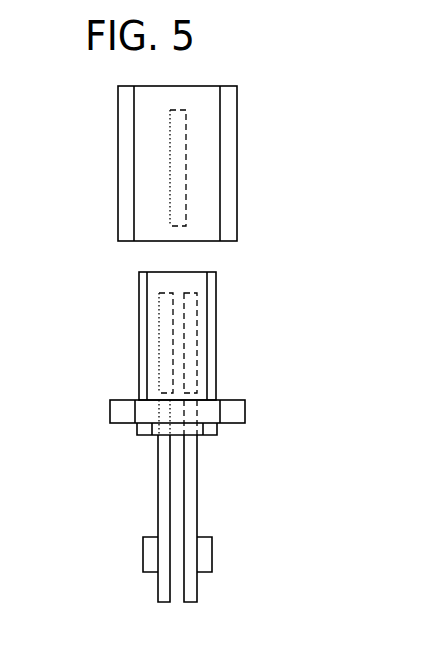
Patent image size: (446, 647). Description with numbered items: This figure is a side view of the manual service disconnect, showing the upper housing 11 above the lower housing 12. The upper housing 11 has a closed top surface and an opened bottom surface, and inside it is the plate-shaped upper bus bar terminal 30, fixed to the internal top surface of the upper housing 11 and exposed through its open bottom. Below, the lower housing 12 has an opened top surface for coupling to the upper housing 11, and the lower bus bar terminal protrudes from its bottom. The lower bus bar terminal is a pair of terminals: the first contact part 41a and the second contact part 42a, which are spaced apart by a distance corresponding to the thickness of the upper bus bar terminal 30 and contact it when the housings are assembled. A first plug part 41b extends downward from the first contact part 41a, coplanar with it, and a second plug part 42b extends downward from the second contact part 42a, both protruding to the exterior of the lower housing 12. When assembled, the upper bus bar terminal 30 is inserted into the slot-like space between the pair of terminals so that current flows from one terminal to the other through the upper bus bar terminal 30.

The upper housing 11 is at (237, 108).
The upper bus bar terminal 30 is at (183, 185).
The lower housing 12 is at (213, 293).
The first contact part 41a is at (160, 353).
The second contact part 42a is at (196, 353).
The first plug part 41b is at (158, 510).
The second plug part 42b is at (197, 508).